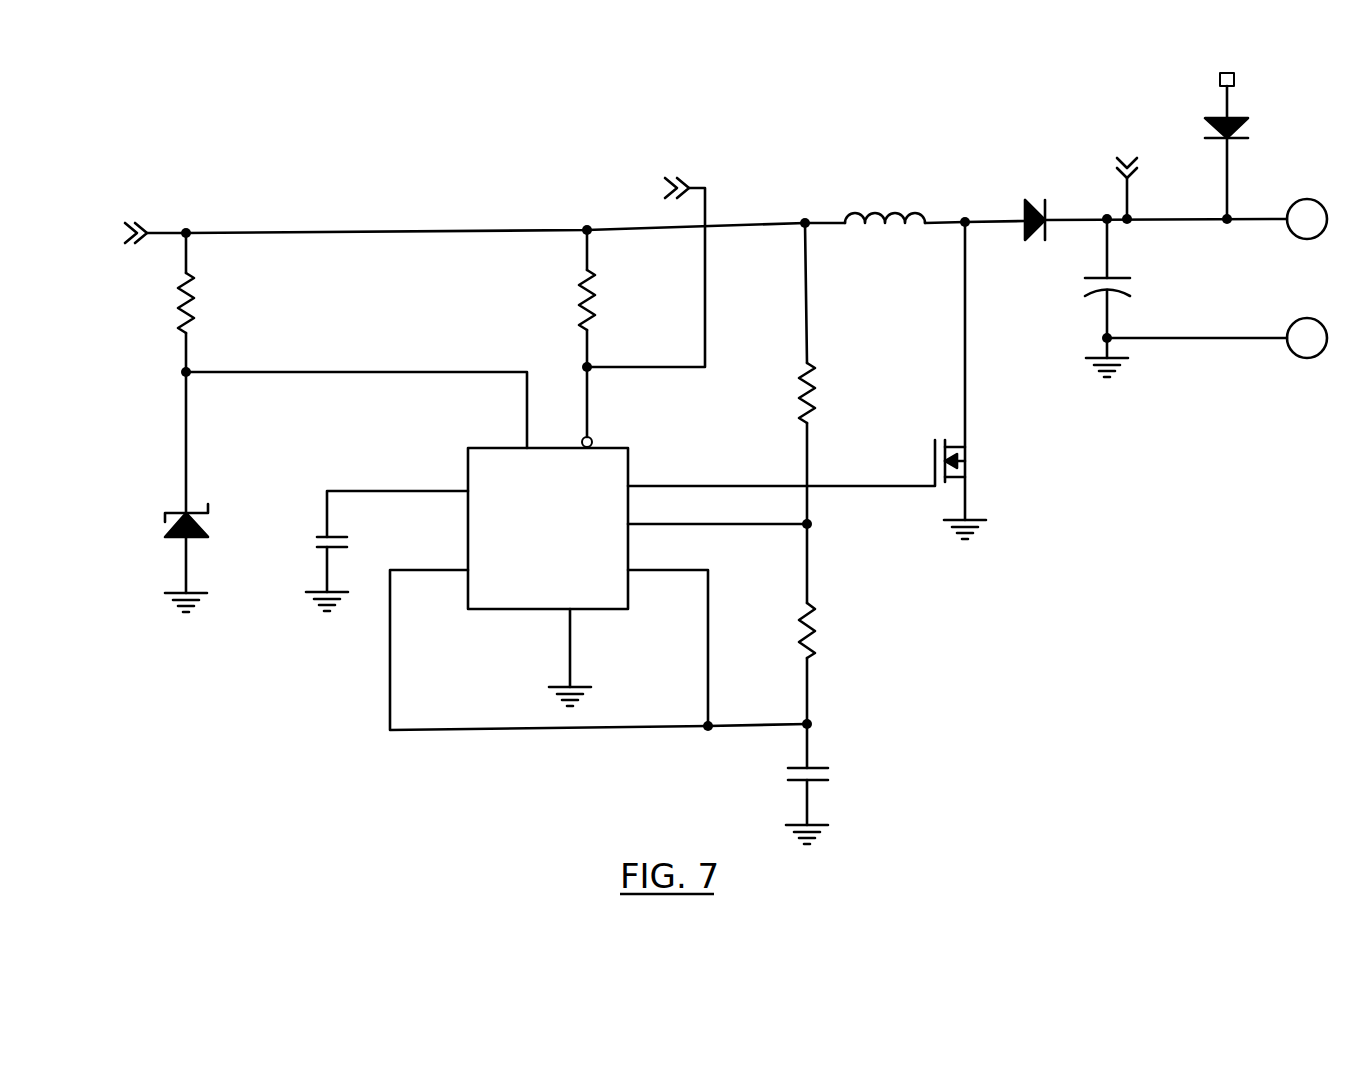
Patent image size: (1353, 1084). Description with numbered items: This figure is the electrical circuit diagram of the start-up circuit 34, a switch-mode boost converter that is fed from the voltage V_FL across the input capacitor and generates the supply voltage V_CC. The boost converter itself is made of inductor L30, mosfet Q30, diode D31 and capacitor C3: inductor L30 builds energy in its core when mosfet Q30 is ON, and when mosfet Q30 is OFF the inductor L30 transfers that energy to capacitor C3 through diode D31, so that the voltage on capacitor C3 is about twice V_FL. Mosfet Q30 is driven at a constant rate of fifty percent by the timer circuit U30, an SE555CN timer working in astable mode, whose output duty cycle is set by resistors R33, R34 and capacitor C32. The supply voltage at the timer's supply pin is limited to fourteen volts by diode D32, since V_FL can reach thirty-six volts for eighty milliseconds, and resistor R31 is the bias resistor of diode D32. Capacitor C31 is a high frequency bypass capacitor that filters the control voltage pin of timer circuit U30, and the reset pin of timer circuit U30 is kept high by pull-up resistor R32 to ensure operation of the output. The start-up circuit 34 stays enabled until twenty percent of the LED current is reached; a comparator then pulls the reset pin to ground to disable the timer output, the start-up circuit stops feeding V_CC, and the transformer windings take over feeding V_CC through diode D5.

The start-up circuit 34 is at (707, 463).
The bias resistor R31 is at (209, 303).
The pull-up resistor R32 is at (610, 300).
The resistor R33 is at (830, 393).
The resistor R34 is at (830, 633).
The high frequency bypass capacitor C31 is at (307, 521).
The capacitor C32 is at (836, 763).
The capacitor C3 is at (1128, 279).
The diode D31 is at (1042, 200).
The diode D32 is at (147, 518).
The diode D5 is at (1248, 105).
The inductor L30 is at (885, 183).
The mosfet Q30 is at (982, 461).
The timer circuit U30 is at (574, 519).